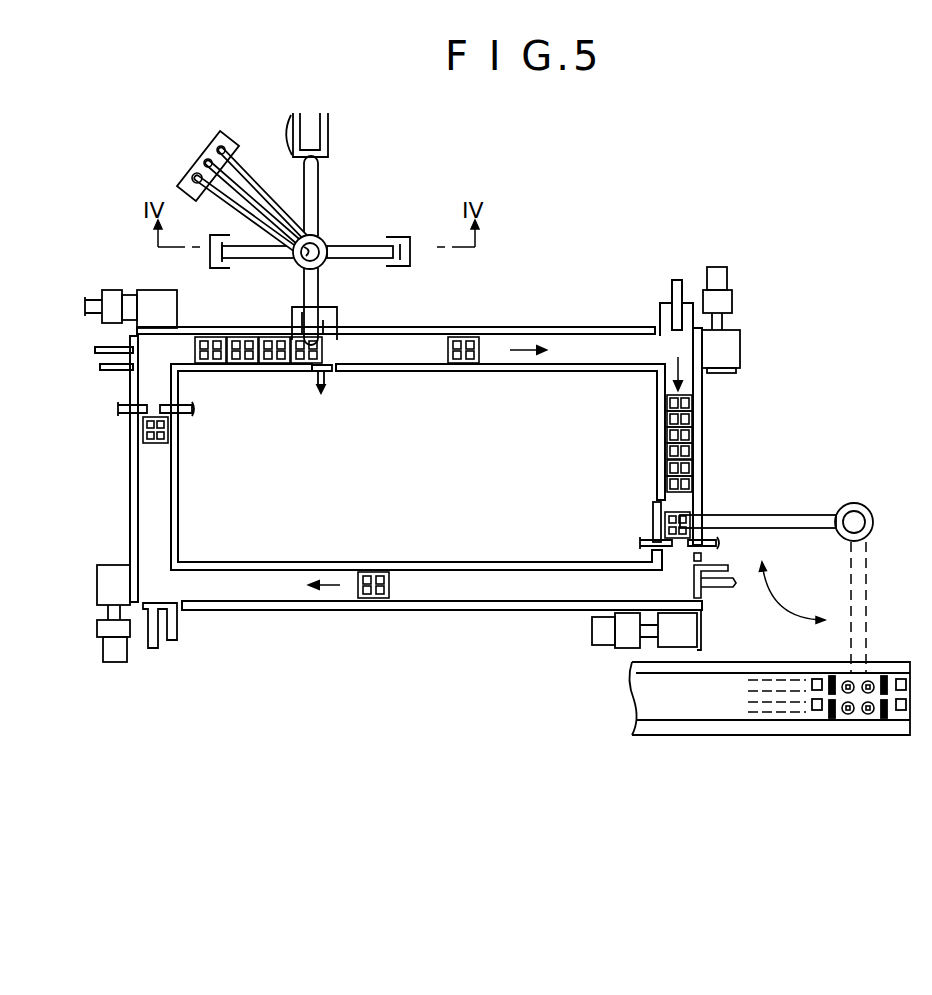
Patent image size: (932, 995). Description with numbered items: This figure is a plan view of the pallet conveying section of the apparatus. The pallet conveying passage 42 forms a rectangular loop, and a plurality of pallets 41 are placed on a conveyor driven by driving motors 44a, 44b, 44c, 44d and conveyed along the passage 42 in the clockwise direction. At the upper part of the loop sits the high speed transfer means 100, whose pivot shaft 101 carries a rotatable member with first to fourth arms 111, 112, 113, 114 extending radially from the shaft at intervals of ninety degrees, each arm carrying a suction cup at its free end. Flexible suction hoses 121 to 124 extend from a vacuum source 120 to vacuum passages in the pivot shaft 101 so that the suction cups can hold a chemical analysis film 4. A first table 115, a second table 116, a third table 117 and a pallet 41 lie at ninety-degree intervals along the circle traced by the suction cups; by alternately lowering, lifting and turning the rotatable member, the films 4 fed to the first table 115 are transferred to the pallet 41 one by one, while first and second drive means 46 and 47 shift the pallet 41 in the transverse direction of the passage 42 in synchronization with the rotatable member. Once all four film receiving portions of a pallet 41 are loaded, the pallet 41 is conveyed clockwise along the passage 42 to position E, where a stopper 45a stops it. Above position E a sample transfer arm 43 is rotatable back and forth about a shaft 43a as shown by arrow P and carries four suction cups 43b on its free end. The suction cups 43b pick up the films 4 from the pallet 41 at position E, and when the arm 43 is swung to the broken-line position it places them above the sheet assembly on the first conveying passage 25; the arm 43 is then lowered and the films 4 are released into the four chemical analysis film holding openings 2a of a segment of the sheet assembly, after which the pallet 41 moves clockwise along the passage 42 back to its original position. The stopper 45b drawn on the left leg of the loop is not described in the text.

The chemical analysis film holding openings 2a is at (875, 683).
The chemical analysis film 4 is at (282, 125).
The first conveying passage 25 is at (712, 738).
The pallet 41 is at (320, 346).
The conveying passage 42 is at (512, 327).
The sample transfer arm 43 is at (795, 515).
The shaft 43a is at (857, 518).
The suction cups 43b is at (718, 546).
The driving motor 44a is at (735, 304).
The driving motor 44b is at (596, 652).
The driving motor 44c is at (104, 652).
The driving motor 44d is at (97, 307).
The stopper 45a is at (647, 535).
The stopper 45b is at (192, 420).
The first drive means 46 is at (326, 377).
The second drive means 47 is at (324, 316).
The high speed transfer means 100 is at (390, 172).
The pivot shaft 101 is at (332, 236).
The first arm 111 is at (321, 206).
The second arm 112 is at (259, 258).
The third arm 113 is at (321, 291).
The fourth arm 114 is at (375, 262).
The first table 115 is at (328, 158).
The second table 116 is at (221, 266).
The third table 117 is at (395, 229).
The vacuum source 120 is at (200, 148).
The suction hose 121 is at (240, 164).
The suction hose 124 is at (258, 186).
The position E is at (708, 498).
The arrow P is at (775, 598).